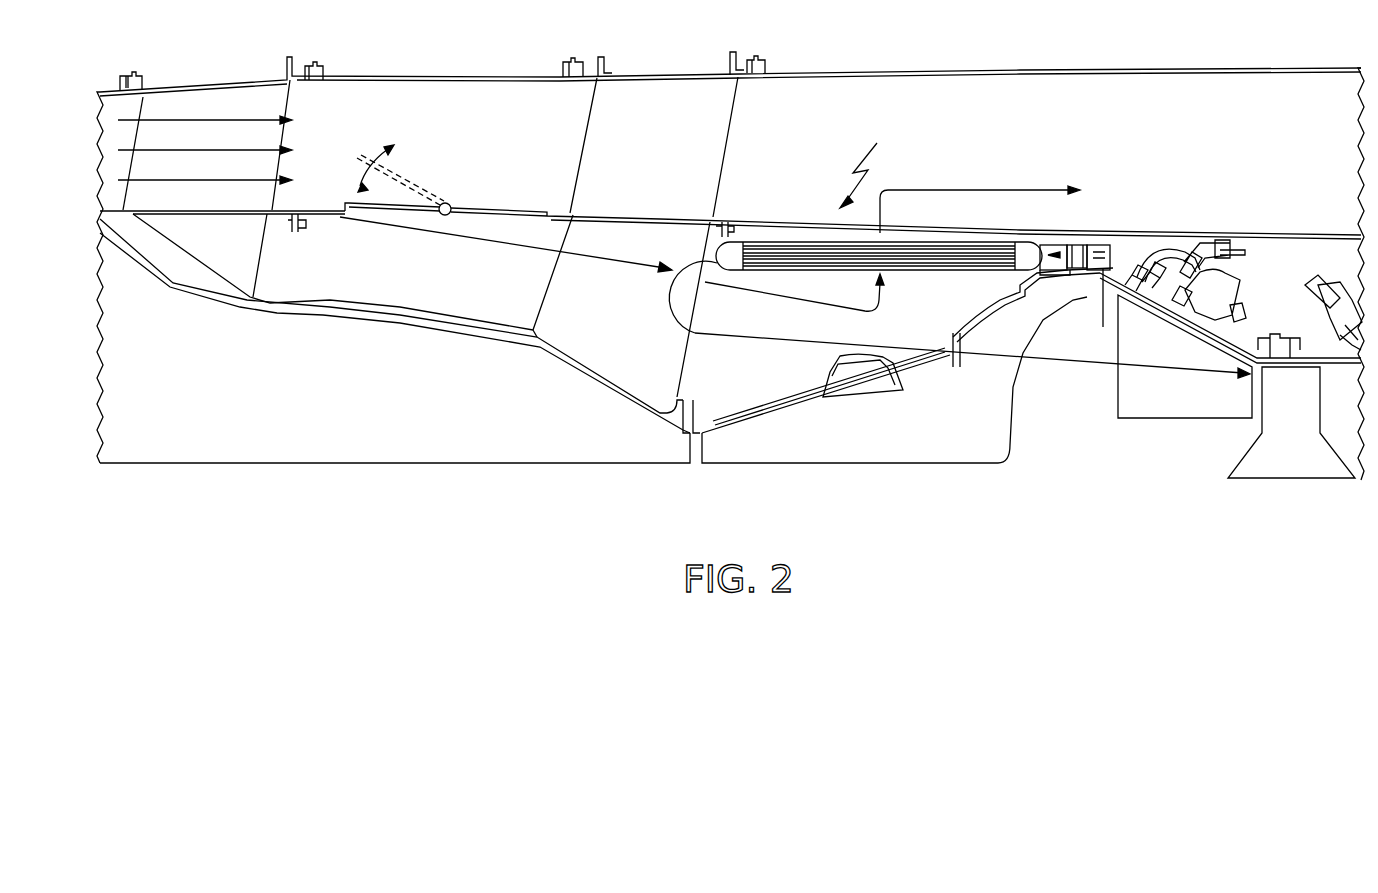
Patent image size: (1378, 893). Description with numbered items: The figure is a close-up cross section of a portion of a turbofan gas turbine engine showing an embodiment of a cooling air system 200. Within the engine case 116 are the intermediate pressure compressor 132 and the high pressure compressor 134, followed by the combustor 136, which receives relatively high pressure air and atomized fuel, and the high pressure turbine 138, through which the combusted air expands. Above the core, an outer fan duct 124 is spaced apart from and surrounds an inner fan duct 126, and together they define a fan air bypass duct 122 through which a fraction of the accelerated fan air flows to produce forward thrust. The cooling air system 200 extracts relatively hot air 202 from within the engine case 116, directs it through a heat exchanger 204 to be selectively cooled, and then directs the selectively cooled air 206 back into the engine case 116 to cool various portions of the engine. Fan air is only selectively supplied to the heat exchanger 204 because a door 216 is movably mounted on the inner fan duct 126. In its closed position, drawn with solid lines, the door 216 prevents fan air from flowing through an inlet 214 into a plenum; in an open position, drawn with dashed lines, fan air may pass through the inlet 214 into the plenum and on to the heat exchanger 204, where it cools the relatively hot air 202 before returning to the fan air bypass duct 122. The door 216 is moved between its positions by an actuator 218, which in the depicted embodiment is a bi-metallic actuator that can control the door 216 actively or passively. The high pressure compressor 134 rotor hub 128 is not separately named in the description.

The engine case 116 is at (613, 378).
The fan air bypass duct 122 is at (471, 129).
The outer fan duct 124 is at (921, 70).
The inner fan duct 126 is at (607, 212).
The high pressure compressor rotor 128 is at (747, 403).
The intermediate pressure compressor 132 is at (395, 463).
The high pressure compressor 134 is at (867, 458).
The combustor 136 is at (1185, 411).
The high pressure turbine 138 is at (1292, 476).
The cooling air system 200 is at (877, 165).
The relatively hot air 202 is at (1100, 267).
The heat exchanger 204 is at (798, 248).
The selectively cooled air 206 is at (767, 340).
The inlet 214 is at (393, 213).
The door 216 is at (347, 203).
The actuator 218 is at (447, 203).